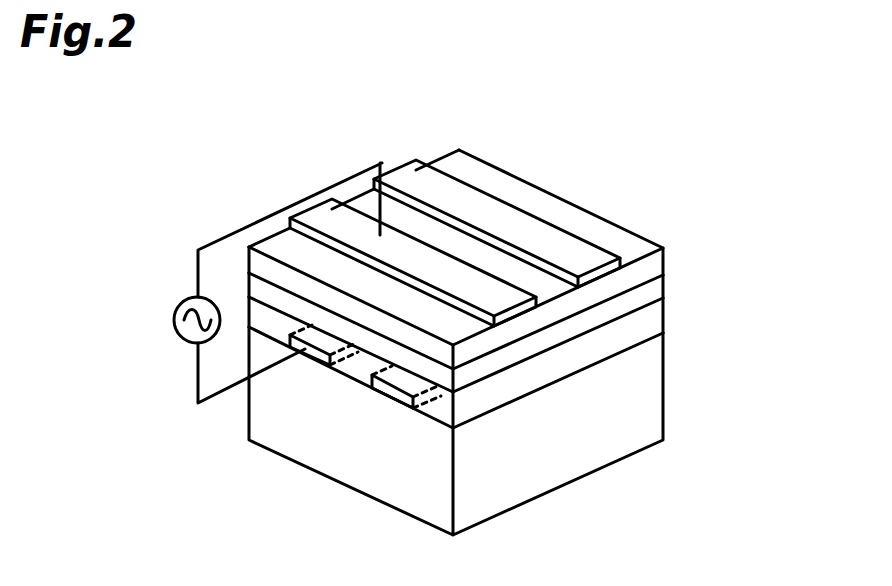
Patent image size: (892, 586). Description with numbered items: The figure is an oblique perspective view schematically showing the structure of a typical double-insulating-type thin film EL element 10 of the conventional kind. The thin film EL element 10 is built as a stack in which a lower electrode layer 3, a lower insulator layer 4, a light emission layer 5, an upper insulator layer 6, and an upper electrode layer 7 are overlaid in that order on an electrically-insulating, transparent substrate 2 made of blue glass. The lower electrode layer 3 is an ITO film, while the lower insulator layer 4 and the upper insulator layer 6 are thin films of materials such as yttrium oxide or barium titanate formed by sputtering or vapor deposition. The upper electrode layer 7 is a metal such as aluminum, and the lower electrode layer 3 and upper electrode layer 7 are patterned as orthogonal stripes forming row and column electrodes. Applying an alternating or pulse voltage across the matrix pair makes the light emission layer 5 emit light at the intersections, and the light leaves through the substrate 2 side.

The thin film EL element 10 is at (496, 291).
The substrate 2 is at (663, 385).
The lower electrode layer 3 is at (375, 388).
The lower insulator layer 4 is at (663, 312).
The light emission layer 5 is at (663, 283).
The upper insulator layer 6 is at (663, 262).
The upper electrode layer 7 is at (560, 243).